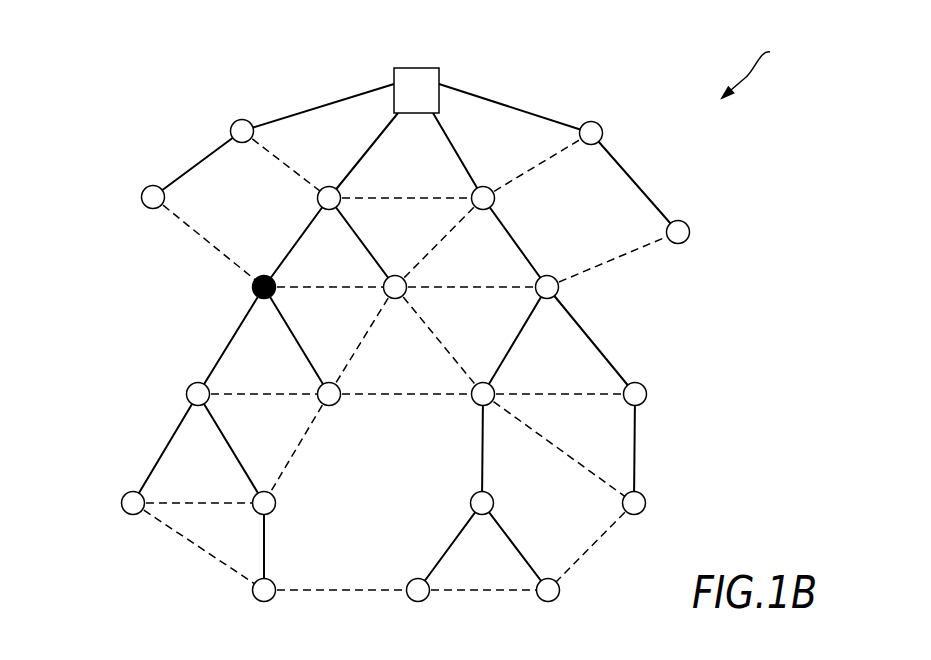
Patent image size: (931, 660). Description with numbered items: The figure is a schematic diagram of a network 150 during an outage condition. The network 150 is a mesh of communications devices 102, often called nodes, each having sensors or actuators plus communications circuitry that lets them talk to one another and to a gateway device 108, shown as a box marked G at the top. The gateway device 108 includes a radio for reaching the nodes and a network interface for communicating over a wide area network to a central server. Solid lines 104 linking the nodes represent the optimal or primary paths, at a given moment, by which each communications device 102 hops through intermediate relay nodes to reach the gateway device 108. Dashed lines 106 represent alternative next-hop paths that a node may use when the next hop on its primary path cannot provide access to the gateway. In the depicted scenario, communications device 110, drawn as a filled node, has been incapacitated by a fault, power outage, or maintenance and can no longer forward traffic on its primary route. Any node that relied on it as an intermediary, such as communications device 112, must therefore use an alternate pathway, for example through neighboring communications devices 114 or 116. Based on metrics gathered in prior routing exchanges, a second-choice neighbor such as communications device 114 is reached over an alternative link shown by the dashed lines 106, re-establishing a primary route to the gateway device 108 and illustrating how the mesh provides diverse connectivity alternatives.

The communications device 102 is at (236, 122).
The solid line 104 is at (324, 108).
The dashed line 106 is at (192, 229).
The gateway device 108 is at (441, 74).
The communications device 110 is at (252, 287).
The communications device 112 is at (647, 394).
The communications device 114 is at (406, 293).
The communications device 116 is at (478, 406).
The network 150 is at (763, 65).